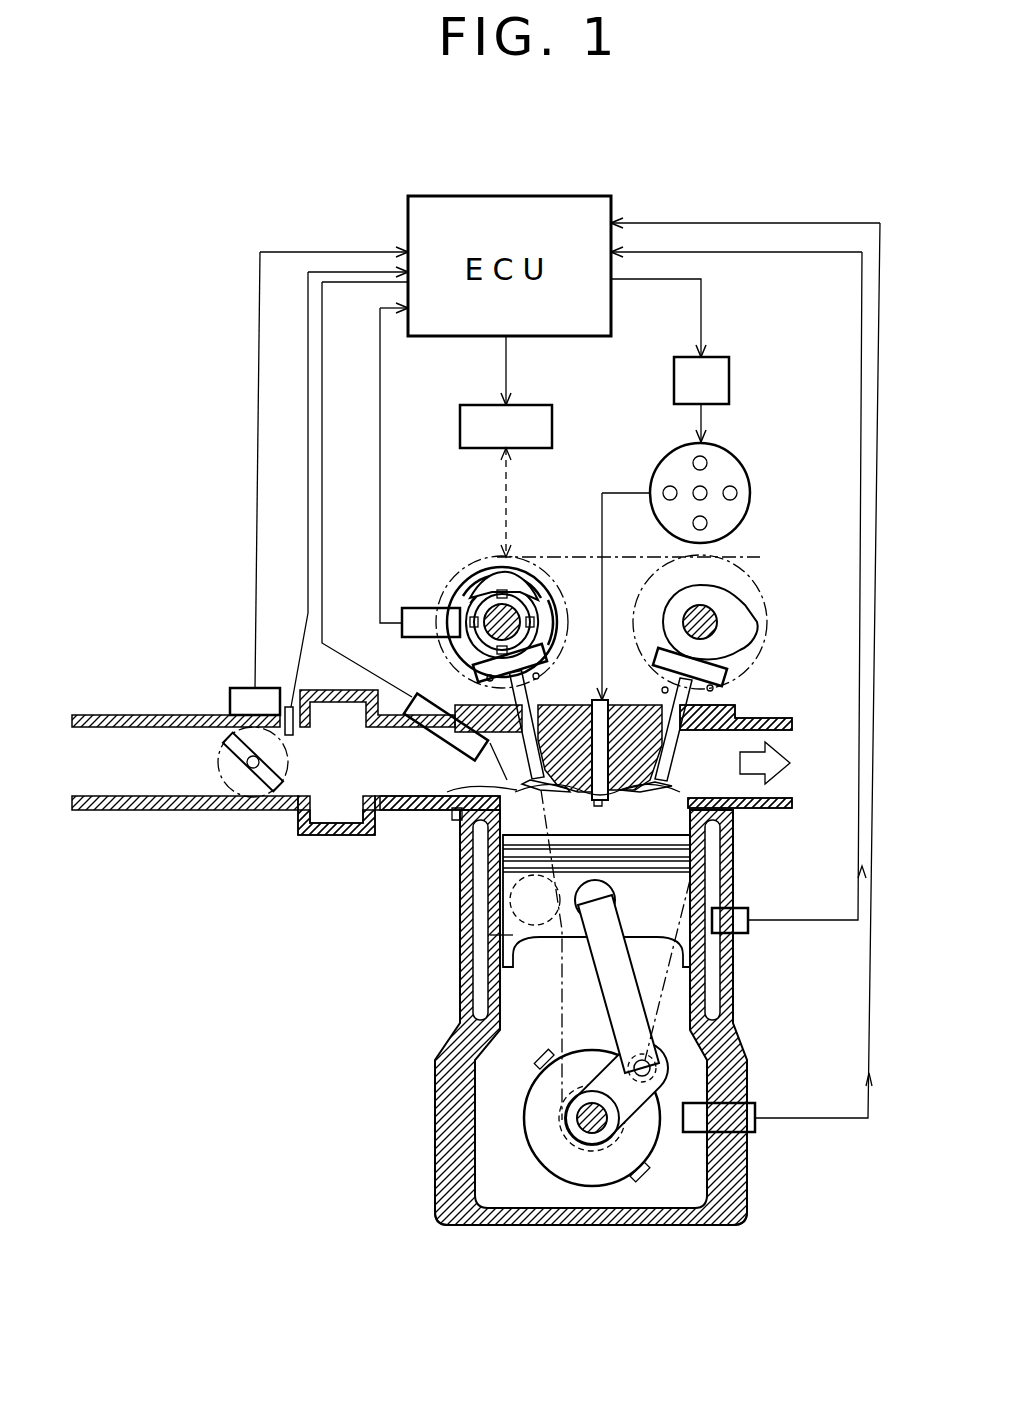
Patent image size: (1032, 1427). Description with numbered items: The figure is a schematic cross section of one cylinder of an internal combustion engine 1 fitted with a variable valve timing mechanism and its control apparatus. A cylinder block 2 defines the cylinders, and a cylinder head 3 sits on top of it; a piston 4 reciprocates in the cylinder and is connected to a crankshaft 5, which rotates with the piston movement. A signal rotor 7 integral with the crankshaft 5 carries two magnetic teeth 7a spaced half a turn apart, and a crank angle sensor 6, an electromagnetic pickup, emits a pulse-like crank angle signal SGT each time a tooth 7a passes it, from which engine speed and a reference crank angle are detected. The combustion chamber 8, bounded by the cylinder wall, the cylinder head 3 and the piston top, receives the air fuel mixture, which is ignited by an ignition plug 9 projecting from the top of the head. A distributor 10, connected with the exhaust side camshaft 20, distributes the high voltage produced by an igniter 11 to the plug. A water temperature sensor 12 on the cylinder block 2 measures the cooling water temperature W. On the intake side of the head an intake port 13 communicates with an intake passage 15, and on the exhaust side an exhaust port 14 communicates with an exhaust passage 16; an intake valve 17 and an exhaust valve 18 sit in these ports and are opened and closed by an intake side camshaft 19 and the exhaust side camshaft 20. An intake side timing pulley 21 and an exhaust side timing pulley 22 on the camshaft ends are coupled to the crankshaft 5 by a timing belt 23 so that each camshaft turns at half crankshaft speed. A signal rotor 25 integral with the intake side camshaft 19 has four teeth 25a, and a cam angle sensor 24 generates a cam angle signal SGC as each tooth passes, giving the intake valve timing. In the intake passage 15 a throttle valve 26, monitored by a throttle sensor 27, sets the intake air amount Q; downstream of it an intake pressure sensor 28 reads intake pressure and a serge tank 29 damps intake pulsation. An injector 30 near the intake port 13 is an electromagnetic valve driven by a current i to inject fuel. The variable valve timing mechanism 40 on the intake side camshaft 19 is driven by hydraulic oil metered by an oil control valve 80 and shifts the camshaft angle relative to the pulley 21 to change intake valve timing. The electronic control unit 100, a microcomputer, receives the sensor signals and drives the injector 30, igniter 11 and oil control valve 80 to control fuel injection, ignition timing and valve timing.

The internal combustion engine 1 is at (457, 1002).
The cylinder block 2 is at (733, 988).
The cylinder head 3 is at (557, 690).
The piston 4 is at (458, 957).
The crankshaft 5 is at (582, 1140).
The crank angle sensor 6 is at (755, 1128).
The signal rotor 7 is at (617, 1183).
The teeth 7a is at (533, 1067).
The combustion chamber 8 is at (510, 933).
The ignition plug 9 is at (608, 700).
The distributor 10 is at (748, 496).
The igniter 11 is at (729, 386).
The water temperature sensor 12 is at (750, 927).
The intake port 13 is at (480, 800).
The exhaust port 14 is at (740, 720).
The intake passage 15 is at (168, 808).
The exhaust passage 16 is at (770, 810).
The intake valve 17 is at (500, 840).
The exhaust valve 18 is at (735, 822).
The intake side camshaft 19 is at (470, 577).
The exhaust side camshaft 20 is at (703, 607).
The intake side timing pulley 21 is at (517, 552).
The exhaust side timing pulley 22 is at (643, 562).
The timing belt 23 is at (560, 557).
The cam angle sensor 24 is at (420, 608).
The signal rotor 25 is at (480, 597).
The teeth 25a is at (500, 580).
The throttle valve 26 is at (253, 797).
The throttle sensor 27 is at (260, 688).
The intake pressure sensor 28 is at (293, 735).
The serge tank 29 is at (333, 835).
The injector 30 is at (440, 687).
The variable valve timing mechanism 40 is at (550, 613).
The oil control valve 80 is at (552, 426).
The electronic control unit 100 is at (572, 336).
The drive current i is at (506, 350).
The intake air amount Q is at (308, 455).
The cam angle signal SGC is at (380, 477).
The cooling water temperature W is at (810, 920).
The crank angle signal SGT is at (808, 1118).